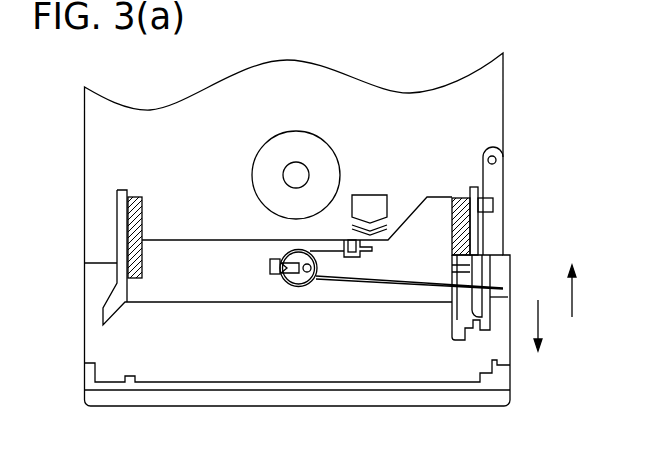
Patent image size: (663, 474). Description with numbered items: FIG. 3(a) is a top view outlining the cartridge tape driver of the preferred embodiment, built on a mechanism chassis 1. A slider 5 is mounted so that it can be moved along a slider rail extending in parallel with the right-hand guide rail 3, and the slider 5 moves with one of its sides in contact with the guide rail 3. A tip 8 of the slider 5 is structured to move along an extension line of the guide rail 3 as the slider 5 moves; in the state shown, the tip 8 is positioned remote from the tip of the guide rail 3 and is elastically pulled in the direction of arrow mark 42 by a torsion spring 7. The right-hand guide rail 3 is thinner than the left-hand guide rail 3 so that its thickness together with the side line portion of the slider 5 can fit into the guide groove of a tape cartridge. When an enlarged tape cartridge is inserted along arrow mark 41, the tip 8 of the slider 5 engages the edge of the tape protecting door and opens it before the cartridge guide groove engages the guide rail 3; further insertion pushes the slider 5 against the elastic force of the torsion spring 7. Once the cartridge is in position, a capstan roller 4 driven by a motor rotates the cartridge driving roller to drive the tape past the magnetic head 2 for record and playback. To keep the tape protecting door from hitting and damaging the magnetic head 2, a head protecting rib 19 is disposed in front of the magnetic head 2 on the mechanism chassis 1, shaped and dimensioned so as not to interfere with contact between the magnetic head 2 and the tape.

The mechanism chassis 1 is at (104, 138).
The magnetic head 2 is at (368, 203).
The guide rail 3 is at (130, 242).
The capstan roller 4 is at (272, 157).
The slider 5 is at (492, 276).
The torsion spring 7 is at (350, 280).
The tip 8 is at (462, 340).
The head protecting rib 19 is at (372, 235).
The arrow mark 41 is at (575, 295).
The arrow mark 42 is at (540, 323).